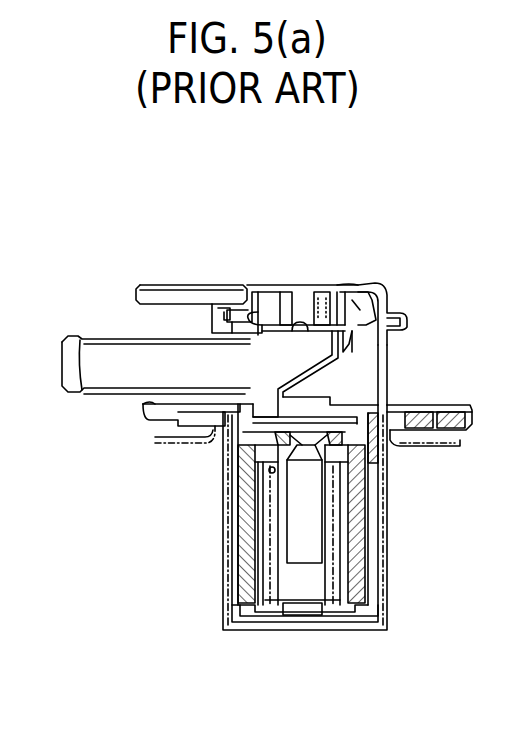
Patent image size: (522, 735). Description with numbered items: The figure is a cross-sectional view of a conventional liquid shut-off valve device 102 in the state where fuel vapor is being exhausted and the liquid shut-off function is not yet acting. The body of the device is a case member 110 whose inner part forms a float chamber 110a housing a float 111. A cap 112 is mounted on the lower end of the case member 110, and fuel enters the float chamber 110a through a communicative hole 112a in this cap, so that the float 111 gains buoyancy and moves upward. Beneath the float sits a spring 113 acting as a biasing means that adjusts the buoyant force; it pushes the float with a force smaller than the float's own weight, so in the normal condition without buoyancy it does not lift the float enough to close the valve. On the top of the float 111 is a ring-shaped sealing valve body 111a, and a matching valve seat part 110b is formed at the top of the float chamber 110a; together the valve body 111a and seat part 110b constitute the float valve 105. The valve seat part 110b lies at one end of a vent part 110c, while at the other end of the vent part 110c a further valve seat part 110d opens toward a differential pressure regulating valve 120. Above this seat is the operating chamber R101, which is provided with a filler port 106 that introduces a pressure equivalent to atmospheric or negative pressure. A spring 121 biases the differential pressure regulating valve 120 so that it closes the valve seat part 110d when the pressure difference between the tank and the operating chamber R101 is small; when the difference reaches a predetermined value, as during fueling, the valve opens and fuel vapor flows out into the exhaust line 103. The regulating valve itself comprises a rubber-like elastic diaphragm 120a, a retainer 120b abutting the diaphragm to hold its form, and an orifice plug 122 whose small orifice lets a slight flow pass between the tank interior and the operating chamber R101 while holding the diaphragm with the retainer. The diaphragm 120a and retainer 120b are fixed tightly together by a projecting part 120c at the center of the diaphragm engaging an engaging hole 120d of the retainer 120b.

The liquid shut-off valve device 102 is at (171, 210).
The exhaust line 103 is at (107, 388).
The float valve 105 is at (270, 427).
The filler port 106 is at (148, 285).
The operating chamber R101 is at (247, 287).
The case member 110 is at (388, 526).
The float chamber 110a is at (372, 586).
The valve seat part 110b is at (340, 396).
The vent part 110c is at (353, 372).
The valve seat part 110d is at (231, 307).
The float 111 is at (370, 484).
The sealing valve body 111a is at (400, 403).
The cap 112 is at (357, 628).
The communicative hole 112a is at (302, 628).
The spring 113 is at (267, 572).
The differential pressure regulating valve 120 is at (363, 306).
The diaphragm 120a is at (398, 316).
The retainer 120b is at (366, 303).
The projecting part 120c is at (330, 293).
The engaging hole 120d is at (300, 288).
The spring 121 is at (296, 290).
The orifice plug 122 is at (398, 330).